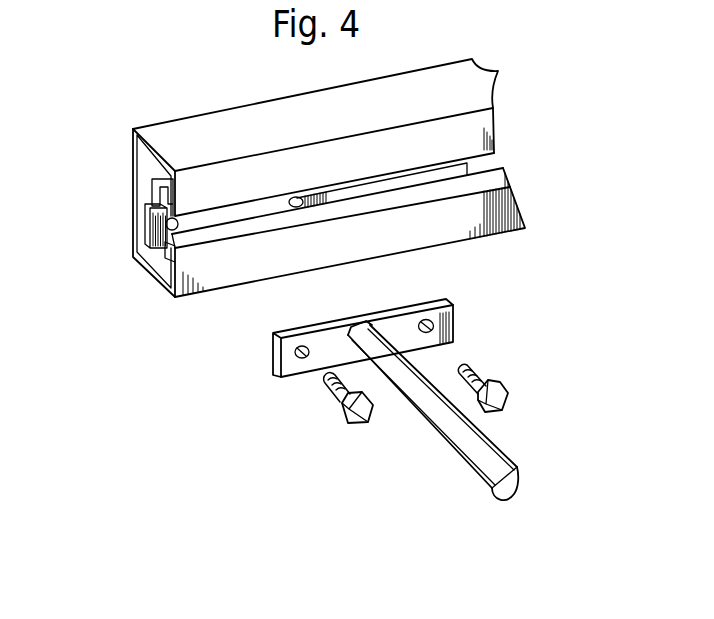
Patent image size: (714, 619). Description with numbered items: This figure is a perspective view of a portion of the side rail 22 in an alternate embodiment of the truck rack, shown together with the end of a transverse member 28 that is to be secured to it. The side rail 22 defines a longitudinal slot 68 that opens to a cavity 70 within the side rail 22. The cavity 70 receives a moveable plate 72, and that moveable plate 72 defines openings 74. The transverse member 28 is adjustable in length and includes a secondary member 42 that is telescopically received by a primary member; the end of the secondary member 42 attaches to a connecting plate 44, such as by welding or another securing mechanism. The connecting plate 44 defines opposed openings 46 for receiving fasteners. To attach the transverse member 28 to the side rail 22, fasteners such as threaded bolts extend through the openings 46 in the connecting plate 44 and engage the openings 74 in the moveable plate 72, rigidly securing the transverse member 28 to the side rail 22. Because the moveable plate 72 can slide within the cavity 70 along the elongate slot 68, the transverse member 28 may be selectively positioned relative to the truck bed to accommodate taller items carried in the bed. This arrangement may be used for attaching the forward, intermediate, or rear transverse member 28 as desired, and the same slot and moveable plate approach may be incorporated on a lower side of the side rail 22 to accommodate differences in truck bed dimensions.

The side rail 22 is at (260, 128).
The transverse member 28 is at (366, 377).
The secondary member 42 is at (450, 431).
The connecting plate 44 is at (332, 337).
The openings 46 is at (295, 356).
The longitudinal slot 68 is at (468, 166).
The cavity 70 is at (152, 191).
The moveable plate 72 is at (150, 227).
The openings 74 is at (167, 260).